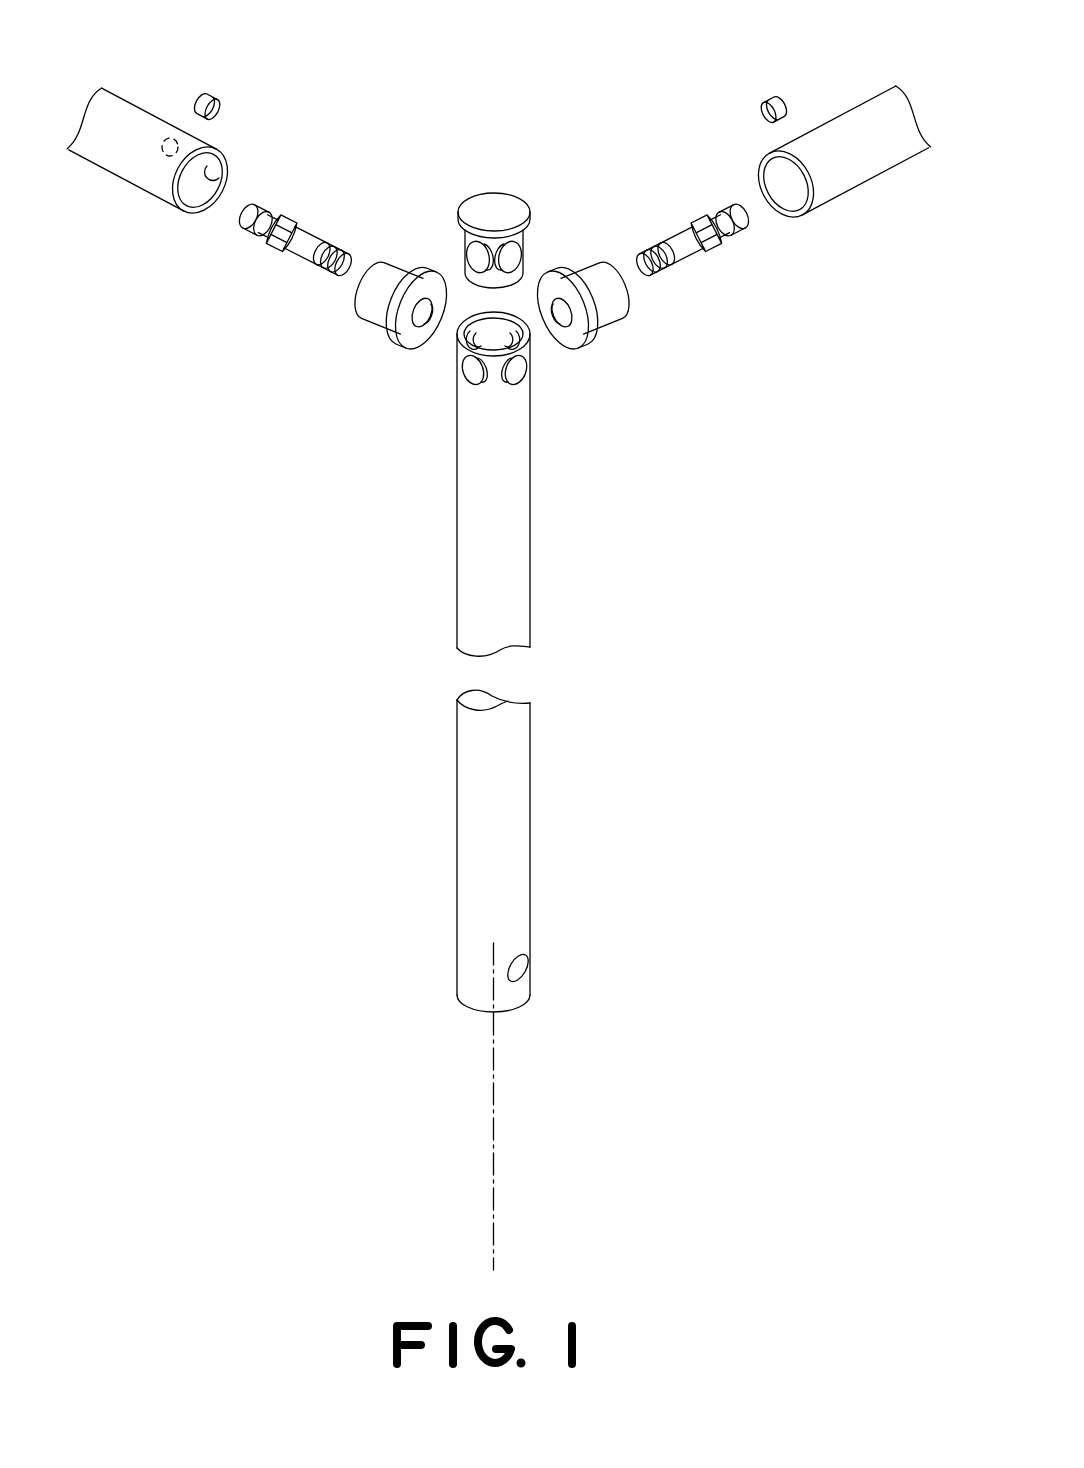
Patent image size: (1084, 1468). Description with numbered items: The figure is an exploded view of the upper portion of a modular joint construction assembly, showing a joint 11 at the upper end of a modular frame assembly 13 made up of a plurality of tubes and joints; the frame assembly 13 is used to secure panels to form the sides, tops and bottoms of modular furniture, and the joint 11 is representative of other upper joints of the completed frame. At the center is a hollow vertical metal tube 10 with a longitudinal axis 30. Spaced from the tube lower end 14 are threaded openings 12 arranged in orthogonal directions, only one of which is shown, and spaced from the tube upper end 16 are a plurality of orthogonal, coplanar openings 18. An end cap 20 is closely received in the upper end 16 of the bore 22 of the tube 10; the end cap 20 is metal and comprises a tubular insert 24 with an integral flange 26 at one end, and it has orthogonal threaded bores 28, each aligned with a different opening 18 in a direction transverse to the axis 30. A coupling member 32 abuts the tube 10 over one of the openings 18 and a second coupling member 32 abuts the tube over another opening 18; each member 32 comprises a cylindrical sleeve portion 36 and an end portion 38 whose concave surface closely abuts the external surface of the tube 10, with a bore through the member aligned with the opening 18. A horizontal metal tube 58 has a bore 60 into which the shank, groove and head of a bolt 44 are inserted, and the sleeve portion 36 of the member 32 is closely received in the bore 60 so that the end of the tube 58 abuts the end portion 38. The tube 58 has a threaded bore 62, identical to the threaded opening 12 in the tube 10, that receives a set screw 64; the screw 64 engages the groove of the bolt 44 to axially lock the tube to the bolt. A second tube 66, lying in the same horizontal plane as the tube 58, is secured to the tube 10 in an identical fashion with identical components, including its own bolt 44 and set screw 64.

The metal tube 10 is at (519, 830).
The joint 11 is at (945, 350).
The threaded openings 12 is at (527, 969).
The modular frame assembly 13 is at (305, 670).
The tube lower end 14 is at (472, 978).
The tube upper end 16 is at (470, 433).
The openings 18 is at (477, 388).
The end cap 20 is at (528, 180).
The bore 22 is at (486, 700).
The tubular insert 24 is at (460, 266).
The flange 26 is at (485, 208).
The threaded bores 28 is at (522, 250).
The longitudinal axis 30 is at (494, 1190).
The coupling member 32 is at (345, 325).
The cylindrical sleeve portion 36 is at (400, 267).
The end portion 38 is at (393, 342).
The bolt 44 is at (298, 247).
The metal tube 58 is at (123, 160).
The bore 60 is at (220, 182).
The threaded bore 62 is at (170, 137).
The set screw 64 is at (207, 93).
The tube 66 is at (858, 163).